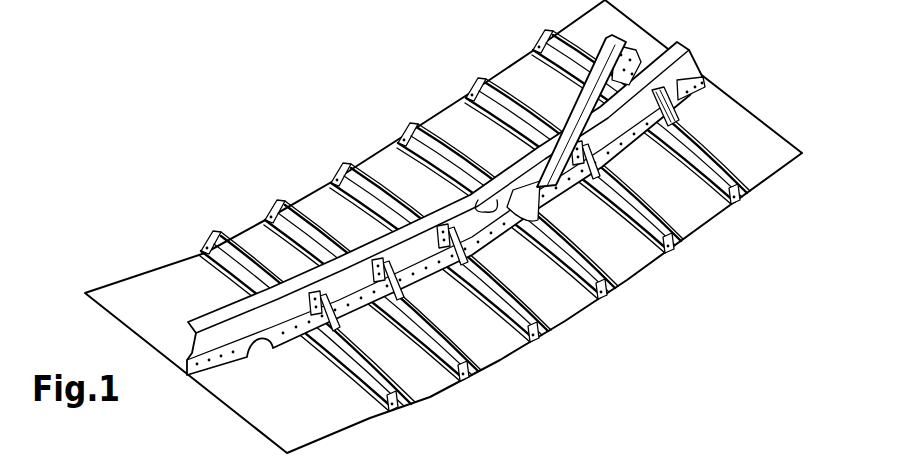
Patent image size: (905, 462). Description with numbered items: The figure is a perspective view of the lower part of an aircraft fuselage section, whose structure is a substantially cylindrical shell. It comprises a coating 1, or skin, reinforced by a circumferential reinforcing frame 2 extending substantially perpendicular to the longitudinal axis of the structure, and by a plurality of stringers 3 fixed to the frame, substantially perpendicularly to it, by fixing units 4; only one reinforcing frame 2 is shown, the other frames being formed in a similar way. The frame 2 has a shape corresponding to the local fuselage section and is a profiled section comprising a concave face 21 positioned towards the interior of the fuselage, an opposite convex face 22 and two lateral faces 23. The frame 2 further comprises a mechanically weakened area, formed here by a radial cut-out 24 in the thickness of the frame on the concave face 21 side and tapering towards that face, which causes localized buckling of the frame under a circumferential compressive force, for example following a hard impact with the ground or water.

The coating 1 is at (160, 289).
The circumferential reinforcing frame 2 is at (421, 252).
The stringer 3 is at (513, 327).
The fixing unit 4 is at (313, 347).
The concave face 21 is at (370, 250).
The convex face 22 is at (227, 370).
The lateral face 23 is at (410, 248).
The radial cut-out 24 is at (493, 200).